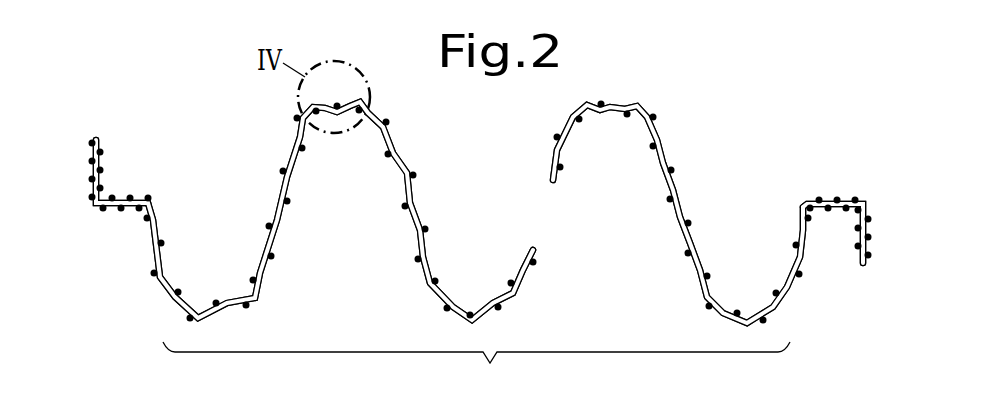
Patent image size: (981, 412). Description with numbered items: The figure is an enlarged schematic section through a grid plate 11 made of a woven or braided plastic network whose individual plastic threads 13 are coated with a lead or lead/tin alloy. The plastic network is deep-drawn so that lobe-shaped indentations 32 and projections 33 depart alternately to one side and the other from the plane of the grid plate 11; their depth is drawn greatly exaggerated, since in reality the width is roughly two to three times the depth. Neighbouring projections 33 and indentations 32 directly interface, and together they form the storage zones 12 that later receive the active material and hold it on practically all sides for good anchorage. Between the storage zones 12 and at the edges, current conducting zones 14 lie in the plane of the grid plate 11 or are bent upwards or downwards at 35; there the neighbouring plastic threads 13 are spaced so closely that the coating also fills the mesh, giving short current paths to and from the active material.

The grid plate 11 is at (707, 121).
The storage zones 12 is at (476, 369).
The plastic thread 13 is at (277, 192).
The current conducting zones 14 is at (82, 140).
The indentations 32 is at (222, 266).
The projections 33 is at (353, 171).
The bent portion of current conducting zone 35 is at (108, 157).